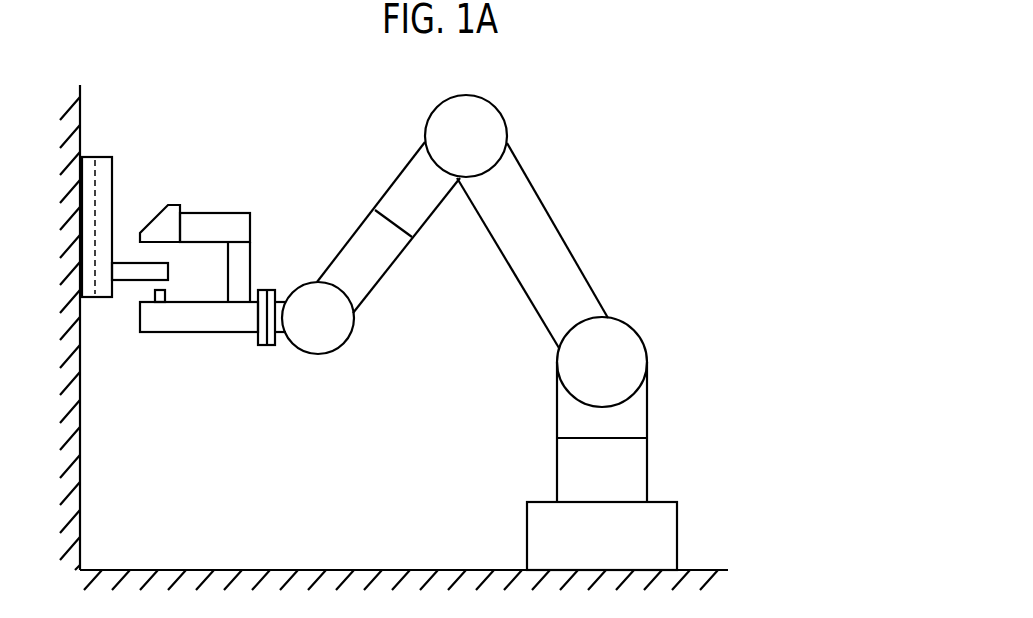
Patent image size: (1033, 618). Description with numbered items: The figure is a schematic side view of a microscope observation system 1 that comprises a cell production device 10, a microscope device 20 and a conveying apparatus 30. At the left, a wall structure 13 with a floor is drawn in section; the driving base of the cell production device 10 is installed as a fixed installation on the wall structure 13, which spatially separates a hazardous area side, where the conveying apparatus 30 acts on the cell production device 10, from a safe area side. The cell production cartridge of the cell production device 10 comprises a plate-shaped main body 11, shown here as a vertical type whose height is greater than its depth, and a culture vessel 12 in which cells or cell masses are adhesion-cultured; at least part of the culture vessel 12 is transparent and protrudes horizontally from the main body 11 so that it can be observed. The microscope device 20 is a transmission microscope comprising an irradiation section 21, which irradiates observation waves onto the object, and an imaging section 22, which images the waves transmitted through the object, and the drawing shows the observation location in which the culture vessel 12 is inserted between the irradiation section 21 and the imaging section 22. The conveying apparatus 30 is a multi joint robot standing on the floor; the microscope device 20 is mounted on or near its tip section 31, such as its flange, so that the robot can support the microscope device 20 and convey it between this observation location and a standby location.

The microscope observation system 1 is at (698, 106).
The cell production device 10 is at (160, 222).
The main body 11 is at (112, 183).
The culture vessel 12 is at (128, 281).
The wall structure 13 is at (80, 478).
The microscope device 20 is at (217, 268).
The irradiation section 21 is at (177, 204).
The imaging section 22 is at (160, 333).
The conveying apparatus 30 is at (492, 332).
The tip section 31 is at (268, 346).